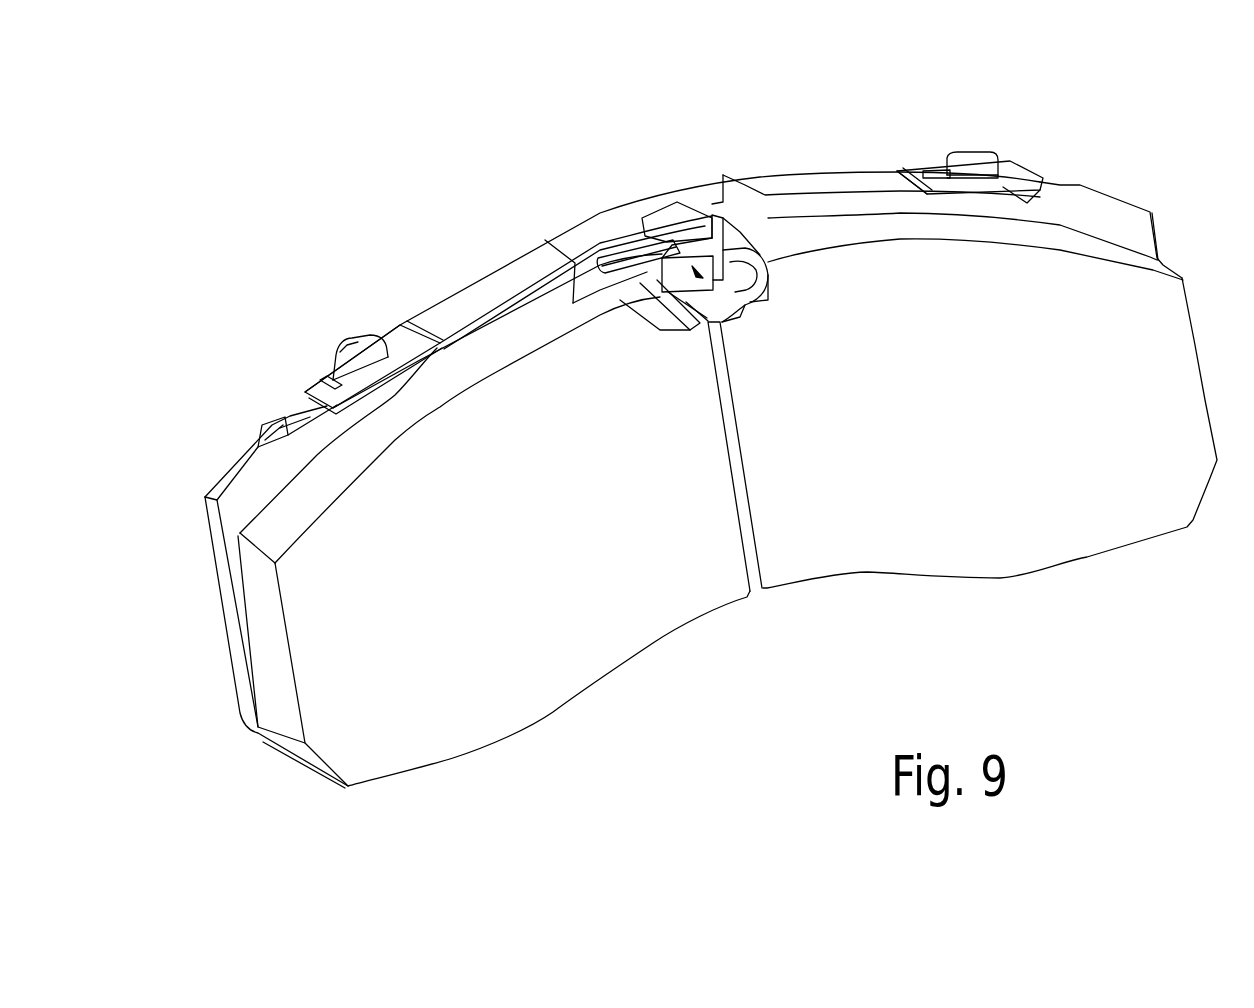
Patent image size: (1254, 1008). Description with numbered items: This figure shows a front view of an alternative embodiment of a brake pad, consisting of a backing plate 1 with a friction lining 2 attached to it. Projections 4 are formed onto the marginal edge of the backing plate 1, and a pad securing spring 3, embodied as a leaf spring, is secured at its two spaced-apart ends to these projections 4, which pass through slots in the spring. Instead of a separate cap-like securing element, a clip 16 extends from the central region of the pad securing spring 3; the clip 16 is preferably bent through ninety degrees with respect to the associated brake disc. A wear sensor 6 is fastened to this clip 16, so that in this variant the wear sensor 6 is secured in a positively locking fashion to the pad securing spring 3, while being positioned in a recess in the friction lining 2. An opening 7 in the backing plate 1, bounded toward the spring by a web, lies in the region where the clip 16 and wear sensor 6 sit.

The backing plate 1 is at (254, 484).
The friction lining 2 is at (422, 725).
The pad securing spring 3 is at (472, 303).
The projections 4 is at (353, 360).
The wear sensor 6 is at (733, 318).
The opening 7 is at (573, 303).
The clip 16 is at (700, 232).